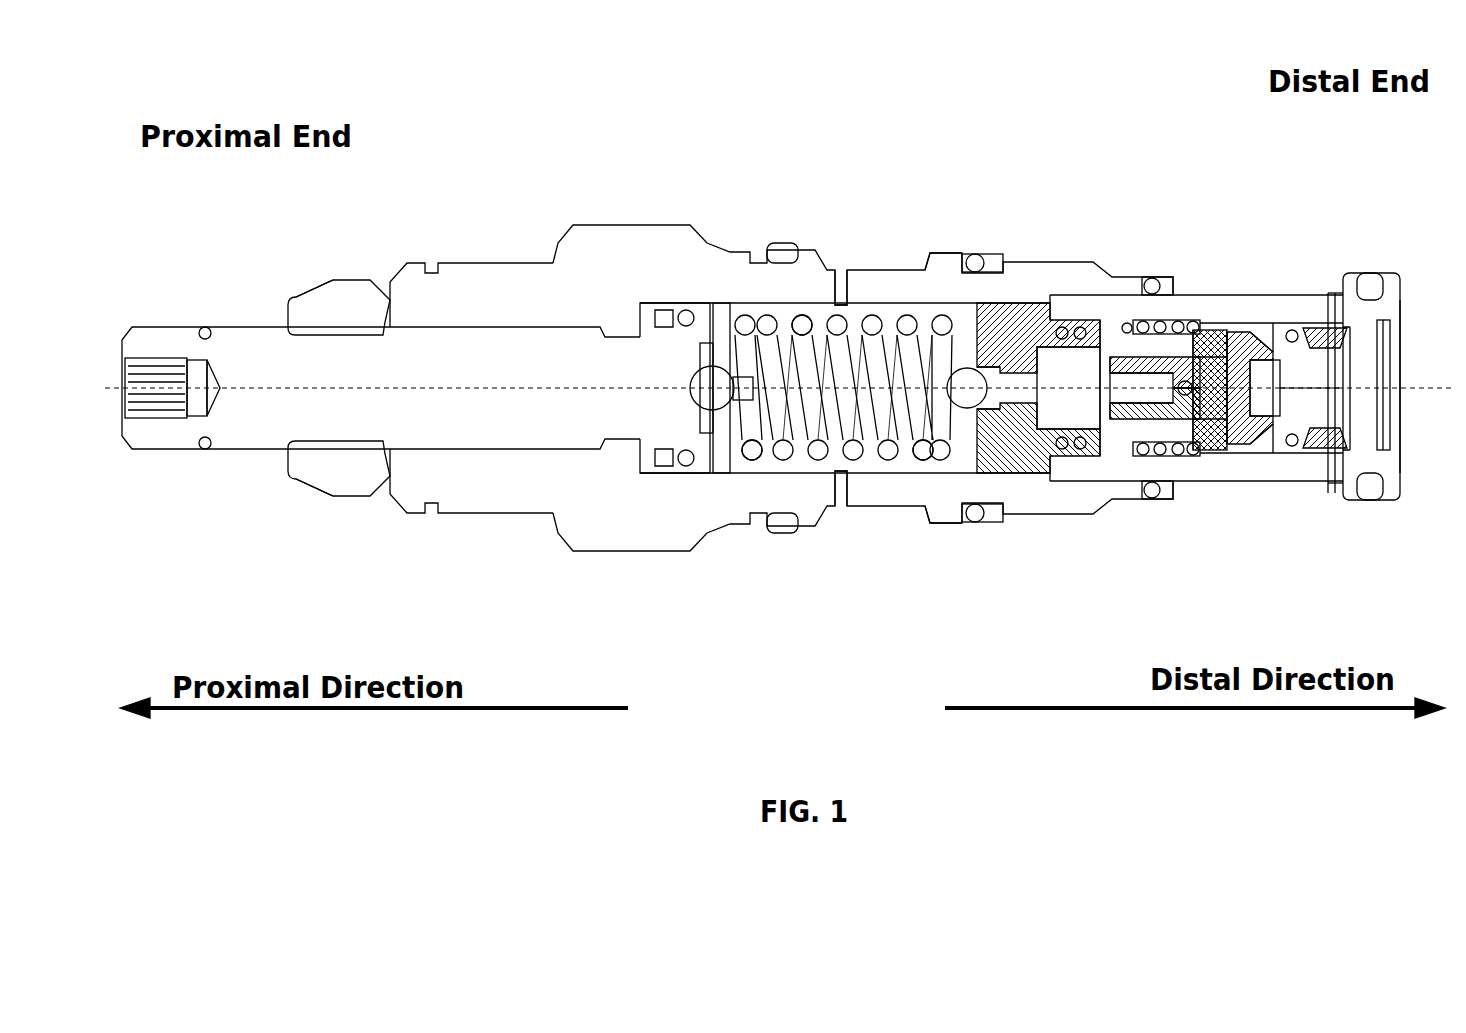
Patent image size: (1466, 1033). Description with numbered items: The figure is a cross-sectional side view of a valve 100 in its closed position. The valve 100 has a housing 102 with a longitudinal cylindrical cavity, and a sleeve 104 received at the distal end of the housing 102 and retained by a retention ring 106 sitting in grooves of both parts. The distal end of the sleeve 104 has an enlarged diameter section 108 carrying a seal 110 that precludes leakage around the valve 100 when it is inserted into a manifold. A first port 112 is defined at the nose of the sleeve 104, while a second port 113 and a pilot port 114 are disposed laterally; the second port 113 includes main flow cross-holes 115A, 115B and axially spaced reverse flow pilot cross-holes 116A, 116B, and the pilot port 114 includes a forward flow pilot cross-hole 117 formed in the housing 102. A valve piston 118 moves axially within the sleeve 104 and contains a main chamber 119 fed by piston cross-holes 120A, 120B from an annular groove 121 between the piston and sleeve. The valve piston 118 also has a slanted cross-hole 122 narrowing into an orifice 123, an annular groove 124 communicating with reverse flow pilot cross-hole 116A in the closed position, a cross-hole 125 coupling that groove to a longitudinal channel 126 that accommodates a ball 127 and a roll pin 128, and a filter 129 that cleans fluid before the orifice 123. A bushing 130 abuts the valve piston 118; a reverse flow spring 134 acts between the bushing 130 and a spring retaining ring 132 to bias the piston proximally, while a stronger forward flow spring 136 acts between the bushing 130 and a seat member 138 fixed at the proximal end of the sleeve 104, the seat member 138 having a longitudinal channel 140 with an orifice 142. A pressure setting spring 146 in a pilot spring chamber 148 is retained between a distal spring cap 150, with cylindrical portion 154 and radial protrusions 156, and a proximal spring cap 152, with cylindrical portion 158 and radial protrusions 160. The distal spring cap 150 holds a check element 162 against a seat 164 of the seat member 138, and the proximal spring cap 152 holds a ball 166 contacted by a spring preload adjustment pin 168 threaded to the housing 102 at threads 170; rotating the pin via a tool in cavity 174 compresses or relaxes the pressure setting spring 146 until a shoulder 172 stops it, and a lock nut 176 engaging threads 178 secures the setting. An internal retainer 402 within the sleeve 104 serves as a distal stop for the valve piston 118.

The valve 100 is at (622, 130).
The housing 102 is at (650, 225).
The sleeve 104 is at (1120, 468).
The retention ring 106 is at (1143, 300).
The enlarged diameter section 108 is at (1400, 283).
The seal 110 is at (1371, 290).
The first port 112 is at (1407, 397).
The second port 113 is at (1302, 230).
The pilot port 114 is at (826, 256).
The main flow cross-hole 115A is at (1333, 307).
The main flow cross-hole 115B is at (1317, 463).
The reverse flow pilot cross-hole 116A is at (1247, 290).
The reverse flow pilot cross-hole 116B is at (1246, 482).
The forward flow pilot cross-hole 117 is at (841, 282).
The valve piston 118 is at (1240, 305).
The main chamber 119 is at (1330, 408).
The piston cross-hole 120A is at (1302, 320).
The piston cross-hole 120B is at (1285, 433).
The annular groove 121 is at (1285, 320).
The slanted cross-hole 122 is at (1220, 417).
The orifice 123 is at (1243, 395).
The annular groove 124 is at (1229, 322).
The cross-hole 125 is at (1204, 383).
The longitudinal channel 126 is at (1217, 350).
The ball 127 is at (1187, 396).
The roll pin 128 is at (1150, 397).
The filter 129 is at (1300, 389).
The bushing 130 is at (1157, 337).
The spring retaining ring 132 is at (1120, 420).
The reverse flow spring 134 is at (1165, 418).
The forward flow spring 136 is at (1127, 330).
The seat member 138 is at (1025, 333).
The longitudinal channel 140 is at (1011, 393).
The orifice 142 is at (1030, 393).
The pressure setting spring 146 is at (802, 322).
The pilot spring chamber 148 is at (836, 458).
The distal spring cap 150 is at (928, 433).
The proximal spring cap 152 is at (750, 440).
The cylindrical portion 154 is at (937, 347).
The radial protrusions 156 is at (960, 317).
The cylindrical portion 158 is at (722, 443).
The radial protrusions 160 is at (707, 390).
The check element 162 is at (967, 392).
The seat 164 is at (983, 362).
The ball 166 is at (740, 417).
The spring preload adjustment pin 168 is at (263, 450).
The threads 170 is at (447, 328).
The shoulder 172 is at (632, 455).
The cavity 174 is at (167, 387).
The lock nut 176 is at (358, 282).
The threads 178 is at (326, 328).
The internal retainer 402 is at (1390, 337).